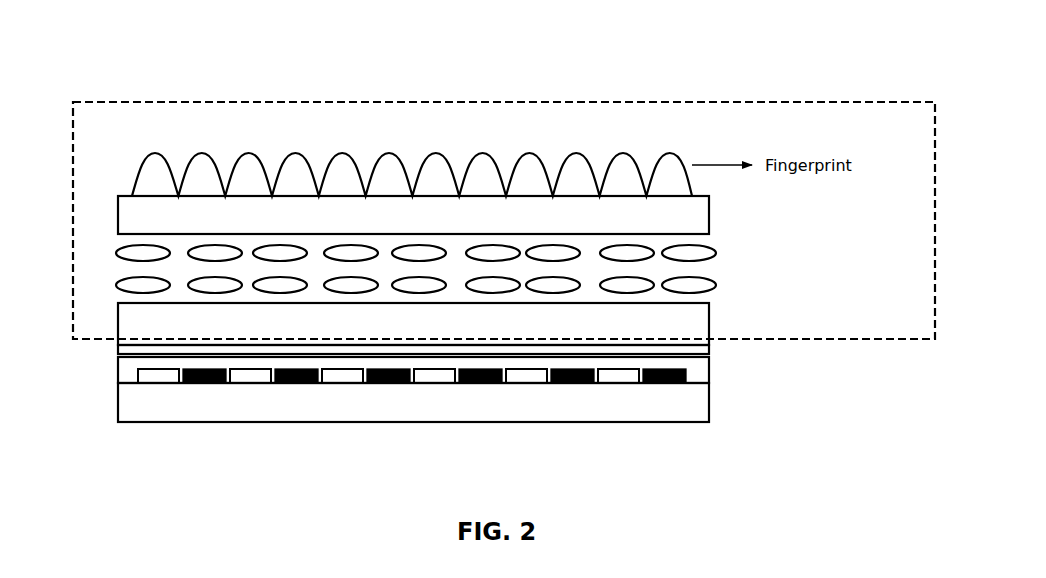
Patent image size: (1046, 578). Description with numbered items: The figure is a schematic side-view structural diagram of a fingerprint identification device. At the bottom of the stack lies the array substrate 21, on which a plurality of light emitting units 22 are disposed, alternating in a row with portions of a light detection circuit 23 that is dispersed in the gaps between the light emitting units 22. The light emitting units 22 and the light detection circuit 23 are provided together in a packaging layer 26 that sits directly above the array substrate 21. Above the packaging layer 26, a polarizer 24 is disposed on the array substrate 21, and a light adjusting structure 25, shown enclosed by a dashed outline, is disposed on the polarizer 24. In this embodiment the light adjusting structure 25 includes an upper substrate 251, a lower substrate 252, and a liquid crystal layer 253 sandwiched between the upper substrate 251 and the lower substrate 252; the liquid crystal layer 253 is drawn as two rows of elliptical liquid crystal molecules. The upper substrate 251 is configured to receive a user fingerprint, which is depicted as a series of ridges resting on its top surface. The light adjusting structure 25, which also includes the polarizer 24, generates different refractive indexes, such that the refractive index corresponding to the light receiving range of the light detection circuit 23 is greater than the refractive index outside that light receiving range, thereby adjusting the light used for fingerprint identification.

The array substrate 21 is at (709, 403).
The light emitting units 22 is at (156, 370).
The light detection circuit 23 is at (670, 385).
The polarizer 24 is at (709, 347).
The light adjusting structure 25 is at (688, 112).
The packaging layer 26 is at (423, 414).
The upper substrate 251 is at (709, 216).
The lower substrate 252 is at (709, 303).
The liquid crystal layer 253 is at (682, 273).